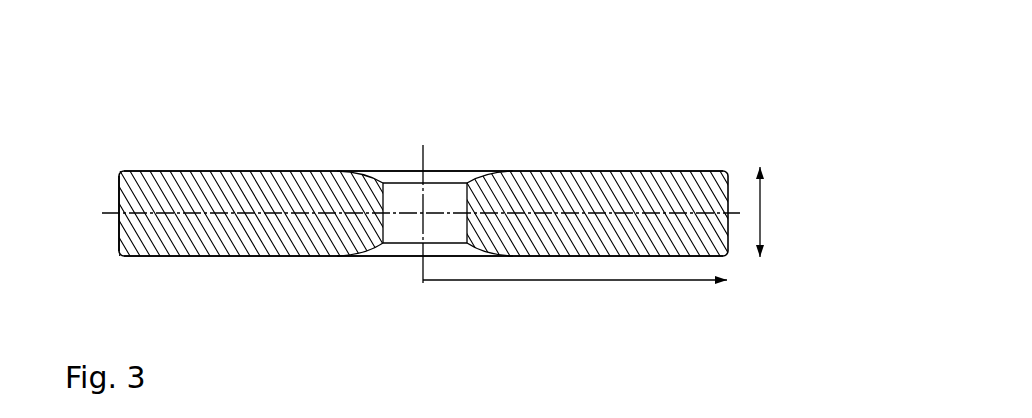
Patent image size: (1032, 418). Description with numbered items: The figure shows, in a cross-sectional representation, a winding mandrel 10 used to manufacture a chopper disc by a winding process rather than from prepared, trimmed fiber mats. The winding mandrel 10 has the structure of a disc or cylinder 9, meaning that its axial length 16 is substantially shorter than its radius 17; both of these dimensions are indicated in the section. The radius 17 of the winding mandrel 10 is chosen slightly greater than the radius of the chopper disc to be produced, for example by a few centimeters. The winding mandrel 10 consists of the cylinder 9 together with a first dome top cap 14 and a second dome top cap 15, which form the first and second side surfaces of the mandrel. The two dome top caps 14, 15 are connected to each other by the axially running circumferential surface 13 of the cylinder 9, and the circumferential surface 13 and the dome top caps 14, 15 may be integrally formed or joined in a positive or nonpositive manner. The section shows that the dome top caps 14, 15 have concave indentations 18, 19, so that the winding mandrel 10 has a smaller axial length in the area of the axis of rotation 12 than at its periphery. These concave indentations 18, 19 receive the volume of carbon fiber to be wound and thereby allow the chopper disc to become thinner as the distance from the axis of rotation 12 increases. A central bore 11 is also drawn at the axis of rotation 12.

The cylinder 9 is at (118, 205).
The winding mandrel 10 is at (649, 73).
The central bore 11 is at (383, 182).
The axis of rotation 12 is at (423, 145).
The circumferential surface 13 is at (118, 187).
The first dome top cap 14 is at (170, 160).
The second dome top cap 15 is at (222, 268).
The axial length 16 is at (760, 192).
The radius 17 is at (608, 280).
The concave indentation 18 is at (485, 172).
The concave indentation 19 is at (487, 257).